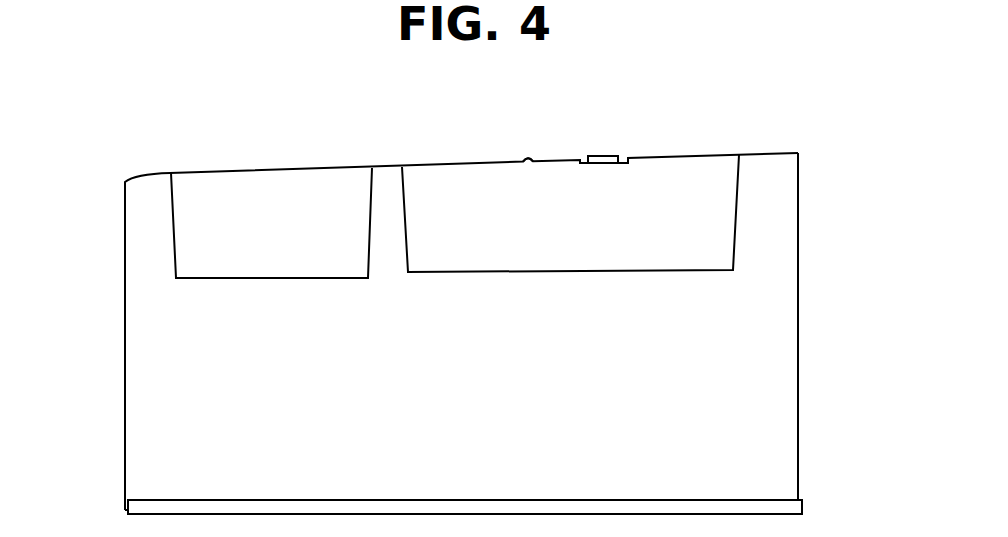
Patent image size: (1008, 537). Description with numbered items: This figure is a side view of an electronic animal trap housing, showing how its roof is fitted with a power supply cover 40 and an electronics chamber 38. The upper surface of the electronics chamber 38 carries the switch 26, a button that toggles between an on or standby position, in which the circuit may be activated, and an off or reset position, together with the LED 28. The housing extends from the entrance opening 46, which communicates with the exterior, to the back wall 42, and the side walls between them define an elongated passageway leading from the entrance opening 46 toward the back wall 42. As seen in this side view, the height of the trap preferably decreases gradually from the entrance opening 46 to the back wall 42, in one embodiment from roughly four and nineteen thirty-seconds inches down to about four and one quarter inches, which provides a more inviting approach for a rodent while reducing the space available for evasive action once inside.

The switch 26 is at (607, 162).
The LED 28 is at (528, 160).
The electronics chamber 38 is at (708, 175).
The power supply cover 40 is at (250, 183).
The back wall 42 is at (125, 371).
The entrance opening 46 is at (799, 303).